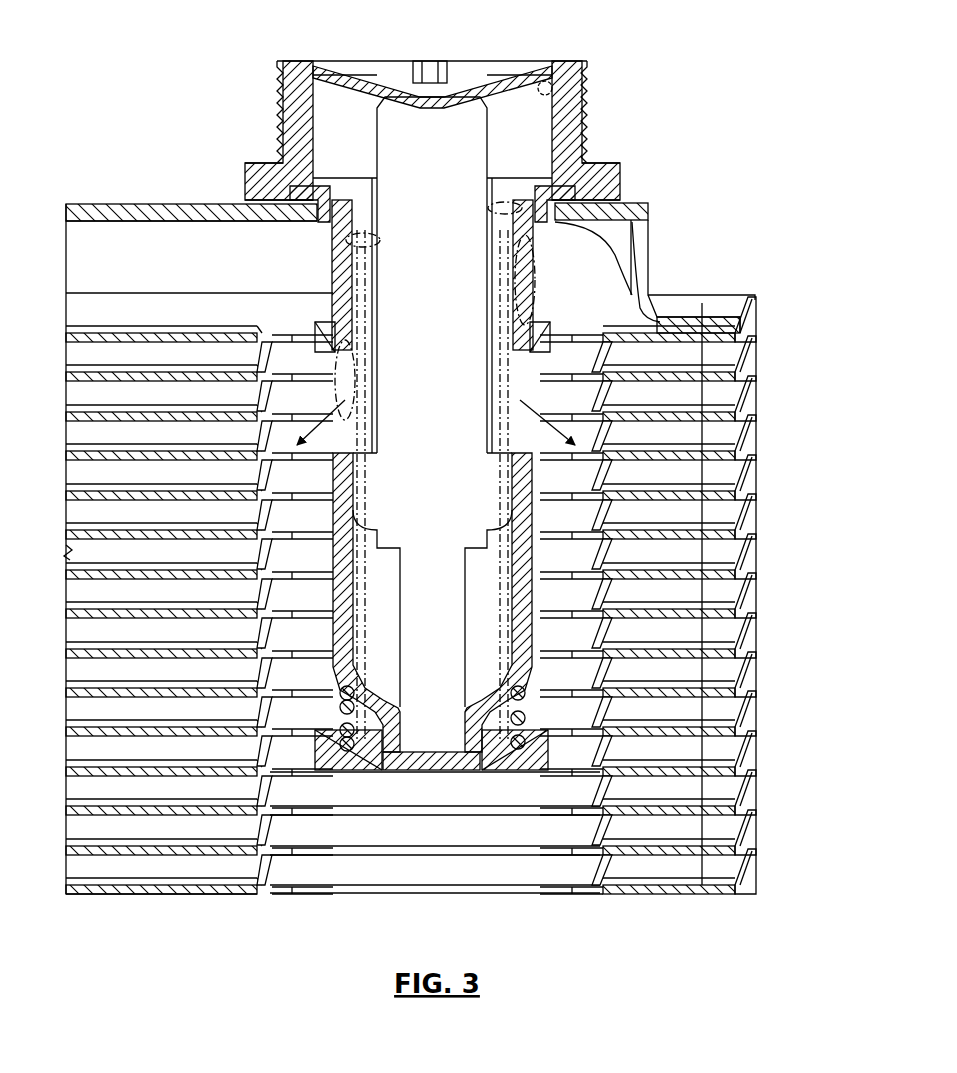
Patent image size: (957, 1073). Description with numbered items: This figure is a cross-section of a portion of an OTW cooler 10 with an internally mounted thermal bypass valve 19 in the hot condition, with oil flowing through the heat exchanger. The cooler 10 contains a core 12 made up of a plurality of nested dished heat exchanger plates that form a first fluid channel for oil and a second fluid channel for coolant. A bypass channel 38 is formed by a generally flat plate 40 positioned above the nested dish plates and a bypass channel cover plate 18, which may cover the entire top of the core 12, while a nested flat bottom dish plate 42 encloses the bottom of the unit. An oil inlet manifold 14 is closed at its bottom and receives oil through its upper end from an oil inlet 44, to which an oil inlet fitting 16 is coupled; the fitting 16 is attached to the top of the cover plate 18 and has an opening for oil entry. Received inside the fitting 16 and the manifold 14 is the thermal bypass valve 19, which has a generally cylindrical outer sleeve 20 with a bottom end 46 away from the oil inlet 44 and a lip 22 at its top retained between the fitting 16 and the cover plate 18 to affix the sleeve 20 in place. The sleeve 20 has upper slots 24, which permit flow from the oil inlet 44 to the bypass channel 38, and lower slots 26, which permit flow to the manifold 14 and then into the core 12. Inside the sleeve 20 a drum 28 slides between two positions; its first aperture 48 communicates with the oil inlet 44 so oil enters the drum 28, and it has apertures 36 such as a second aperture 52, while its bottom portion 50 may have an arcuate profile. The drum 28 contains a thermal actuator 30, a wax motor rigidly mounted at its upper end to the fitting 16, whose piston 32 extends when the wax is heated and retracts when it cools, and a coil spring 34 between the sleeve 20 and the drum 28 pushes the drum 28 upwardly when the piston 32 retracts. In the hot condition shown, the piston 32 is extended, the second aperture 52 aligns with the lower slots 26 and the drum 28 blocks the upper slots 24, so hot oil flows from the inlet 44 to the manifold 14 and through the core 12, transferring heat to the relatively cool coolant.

The OTW cooler 10 is at (122, 150).
The core 12 is at (757, 473).
The oil inlet manifold 14 is at (580, 600).
The oil inlet fitting 16 is at (590, 124).
The bypass channel cover plate 18 is at (182, 204).
The thermal bypass valve 19 is at (600, 200).
The outer sleeve 20 is at (312, 333).
The lip 22 is at (303, 185).
The upper slots 24 is at (555, 272).
The lower slots 26 is at (318, 594).
The drum 28 is at (355, 567).
The thermal actuator 30 is at (432, 602).
The piston 32 is at (431, 721).
The coil spring 34 is at (540, 767).
The apertures 36 is at (560, 365).
The bypass channel 38 is at (199, 268).
The flat plate 40 is at (147, 333).
The flat bottom dish plate 42 is at (163, 895).
The oil inlet 44 is at (528, 340).
The bottom end 46 is at (343, 768).
The first aperture 48 is at (352, 340).
The bottom portion 50 is at (403, 765).
The second aperture 52 is at (352, 440).